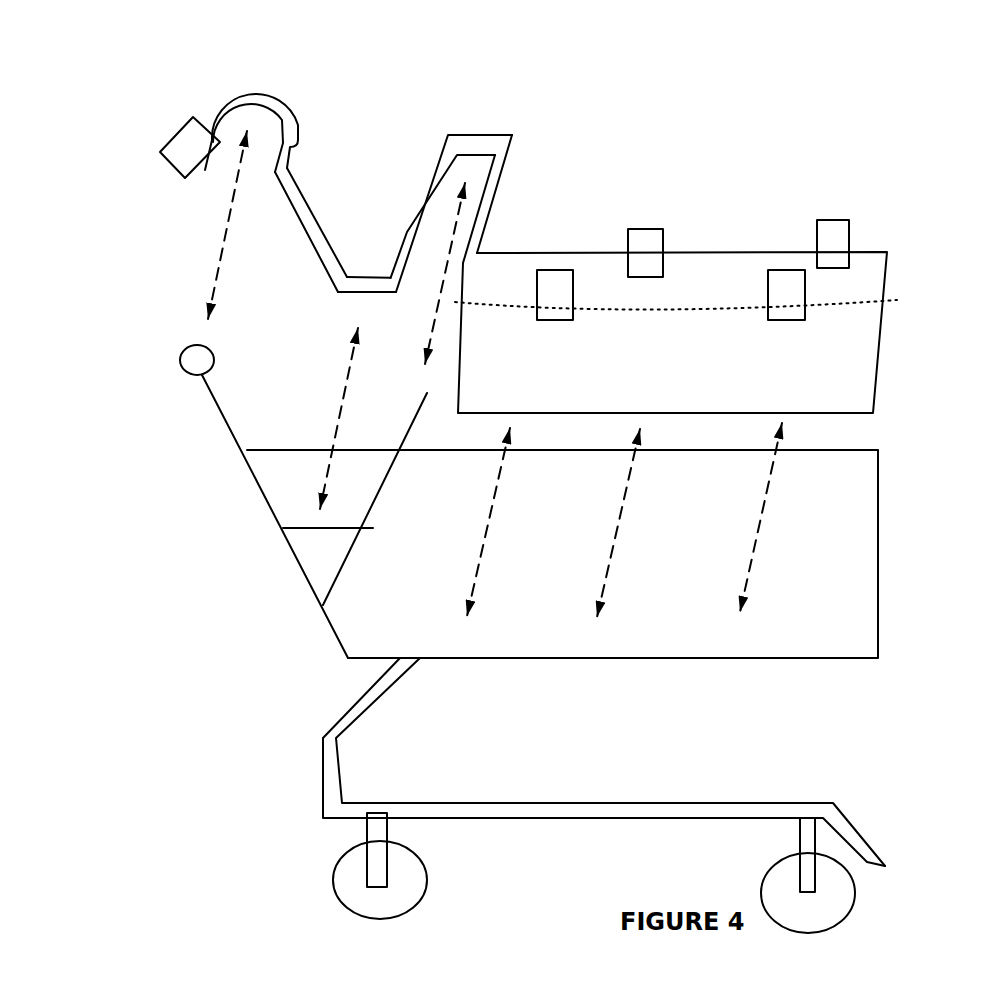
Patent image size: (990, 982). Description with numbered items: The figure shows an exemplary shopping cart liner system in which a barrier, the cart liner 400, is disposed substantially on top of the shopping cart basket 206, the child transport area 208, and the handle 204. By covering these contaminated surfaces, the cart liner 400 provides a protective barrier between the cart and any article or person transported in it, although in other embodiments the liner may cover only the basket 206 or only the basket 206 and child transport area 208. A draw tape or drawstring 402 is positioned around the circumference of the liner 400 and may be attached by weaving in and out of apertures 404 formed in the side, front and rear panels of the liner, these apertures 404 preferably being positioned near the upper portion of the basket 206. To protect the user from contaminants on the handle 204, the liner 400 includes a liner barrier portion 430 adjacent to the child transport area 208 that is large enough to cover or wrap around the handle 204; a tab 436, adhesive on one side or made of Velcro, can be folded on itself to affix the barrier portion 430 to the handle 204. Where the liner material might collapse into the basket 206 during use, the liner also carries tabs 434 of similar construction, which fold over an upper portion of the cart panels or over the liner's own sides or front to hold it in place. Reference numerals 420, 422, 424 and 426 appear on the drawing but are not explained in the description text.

The handle 204 is at (195, 344).
The shopping cart basket 206 is at (816, 520).
The child transport area 208 is at (313, 378).
The cart liner 400 is at (713, 306).
The drawstring 402 is at (906, 303).
The apertures 404 is at (549, 278).
The descending wall portion 420 is at (505, 195).
The rising wall portion 422 is at (428, 176).
The trough bottom 424 is at (360, 269).
The inclined wall 426 is at (304, 184).
The liner barrier portion 430 is at (281, 101).
The tabs 434 is at (170, 142).
The tab 436 is at (653, 238).